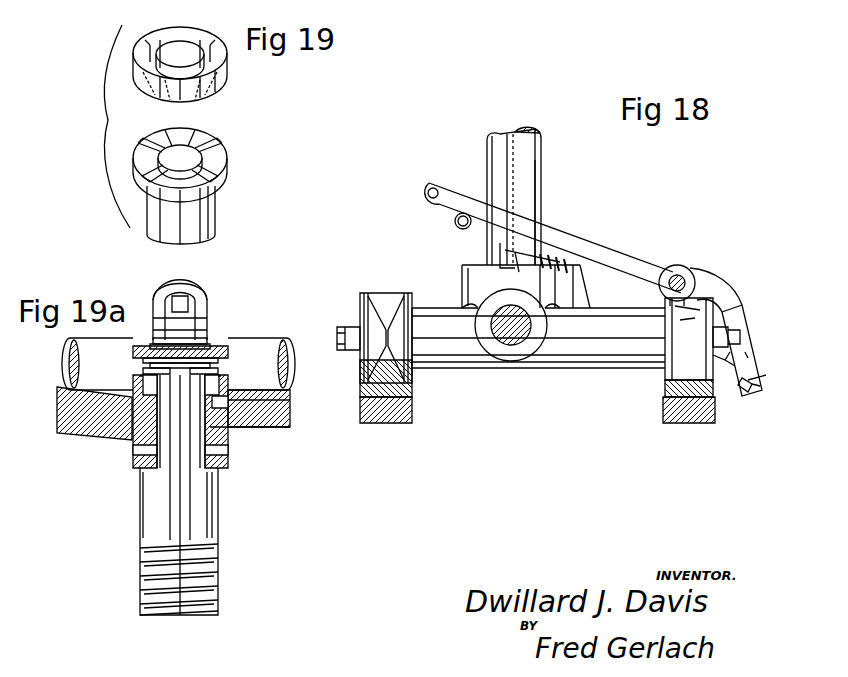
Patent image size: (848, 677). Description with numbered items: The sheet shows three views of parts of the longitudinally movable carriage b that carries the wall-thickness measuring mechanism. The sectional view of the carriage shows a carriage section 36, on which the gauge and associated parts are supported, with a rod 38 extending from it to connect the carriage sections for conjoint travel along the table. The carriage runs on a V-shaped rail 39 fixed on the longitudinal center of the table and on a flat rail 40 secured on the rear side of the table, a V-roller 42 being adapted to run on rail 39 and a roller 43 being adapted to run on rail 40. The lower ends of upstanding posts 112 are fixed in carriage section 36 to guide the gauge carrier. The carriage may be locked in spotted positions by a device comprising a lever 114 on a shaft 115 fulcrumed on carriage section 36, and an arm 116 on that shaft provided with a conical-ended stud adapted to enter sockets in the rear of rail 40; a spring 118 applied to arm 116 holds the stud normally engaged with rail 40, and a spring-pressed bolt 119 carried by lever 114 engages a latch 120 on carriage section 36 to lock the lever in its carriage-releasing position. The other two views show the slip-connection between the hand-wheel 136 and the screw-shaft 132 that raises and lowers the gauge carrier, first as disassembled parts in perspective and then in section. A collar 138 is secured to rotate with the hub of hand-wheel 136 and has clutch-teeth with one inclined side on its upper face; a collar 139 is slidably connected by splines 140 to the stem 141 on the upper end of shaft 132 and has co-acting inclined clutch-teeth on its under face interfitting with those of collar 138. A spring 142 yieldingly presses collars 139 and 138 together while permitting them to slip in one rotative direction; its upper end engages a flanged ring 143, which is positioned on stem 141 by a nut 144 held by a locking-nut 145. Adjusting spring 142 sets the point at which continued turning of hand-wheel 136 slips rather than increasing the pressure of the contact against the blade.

In FIG. 18, the carriage section 36 is at (598, 338).
In FIG. 18, the rod 38 is at (510, 345).
In FIG. 18, the V-shaped rail 39 is at (413, 390).
In FIG. 18, the flat rail 40 is at (665, 400).
In FIG. 18, the V-rollers 42 is at (397, 322).
In FIG. 18, the rollers 43 is at (685, 335).
In FIG. 18, the carriage b is at (565, 335).
In FIG. 18, the upstanding posts 112 is at (508, 170).
In FIG. 18, the lever 114 is at (455, 222).
In FIG. 18, the shaft 115 is at (665, 270).
In FIG. 18, the arm 116 is at (722, 305).
In FIG. 18, the spring 118 is at (720, 360).
In FIG. 18, the spring-pressed bolt 119 is at (540, 232).
In FIG. 18, the latch 120 is at (560, 290).
In FIG. 19A, the screw-shaft 132 is at (163, 513).
In FIG. 19A, the hand-wheel 136 is at (240, 420).
In FIG. 19, the collar 138 is at (212, 170).
In FIG. 19A, the collar 138 is at (135, 435).
In FIG. 19, the collar 139 is at (225, 78).
In FIG. 19A, the splines 140 is at (155, 386).
In FIG. 19A, the stem 141 is at (226, 403).
In FIG. 19A, the spring 142 is at (222, 347).
In FIG. 19A, the flanged ring 143 is at (135, 351).
In FIG. 19A, the nut 144 is at (200, 342).
In FIG. 19A, the locking-nut 145 is at (208, 290).